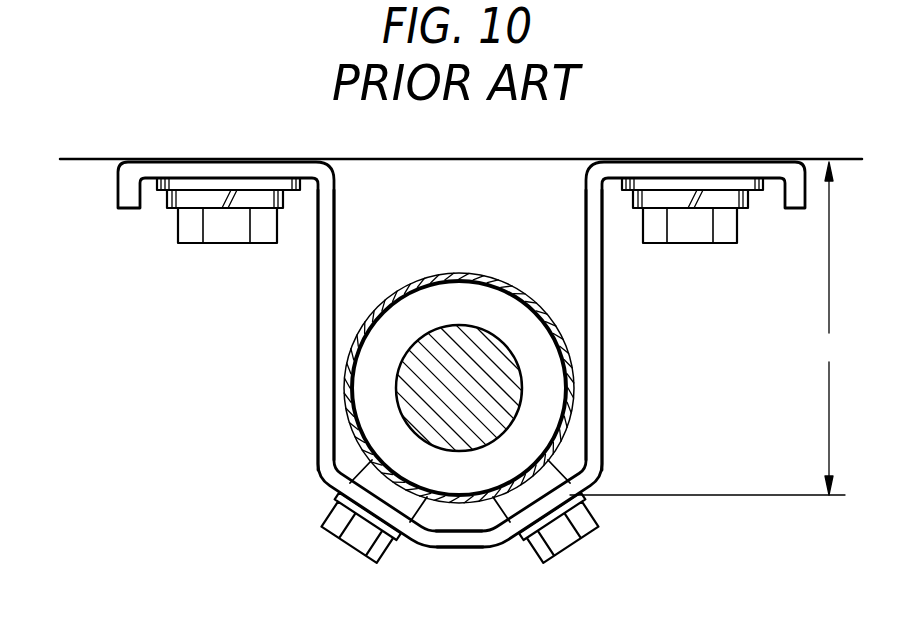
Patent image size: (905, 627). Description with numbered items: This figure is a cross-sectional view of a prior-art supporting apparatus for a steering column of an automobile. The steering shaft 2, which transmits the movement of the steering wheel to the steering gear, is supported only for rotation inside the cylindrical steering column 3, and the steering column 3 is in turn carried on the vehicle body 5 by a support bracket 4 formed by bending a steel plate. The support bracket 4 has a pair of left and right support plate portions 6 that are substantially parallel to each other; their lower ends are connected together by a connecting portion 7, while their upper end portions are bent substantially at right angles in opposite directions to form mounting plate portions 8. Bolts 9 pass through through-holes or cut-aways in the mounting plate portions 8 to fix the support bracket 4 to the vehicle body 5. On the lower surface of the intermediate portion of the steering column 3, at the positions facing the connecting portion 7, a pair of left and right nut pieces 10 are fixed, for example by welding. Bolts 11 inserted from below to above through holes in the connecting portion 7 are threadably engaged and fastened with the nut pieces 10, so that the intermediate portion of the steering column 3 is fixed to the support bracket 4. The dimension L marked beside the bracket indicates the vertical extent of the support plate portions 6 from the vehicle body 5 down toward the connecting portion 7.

The steering shaft 2 is at (457, 333).
The steering column 3 is at (517, 293).
The support bracket 4 is at (327, 373).
The vehicle body 5 is at (97, 147).
The support plate portions 6 is at (327, 313).
The connecting portion 7 is at (481, 537).
The mounting plate portions 8 is at (223, 165).
The bolts 9 is at (228, 233).
The nut pieces 10 is at (570, 475).
The bolts 11 is at (358, 543).
The distance L is at (707, 328).